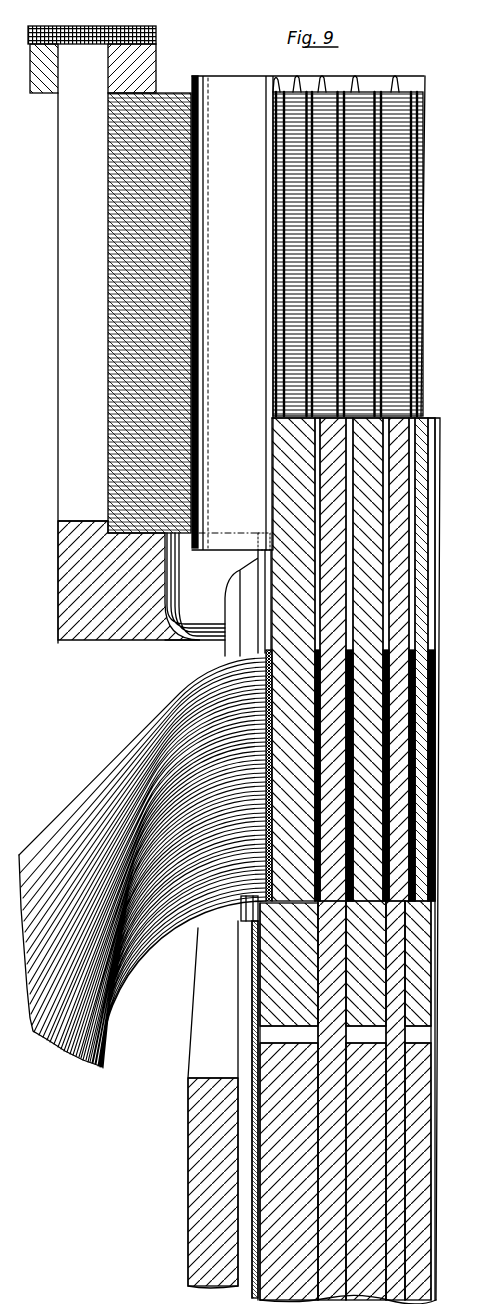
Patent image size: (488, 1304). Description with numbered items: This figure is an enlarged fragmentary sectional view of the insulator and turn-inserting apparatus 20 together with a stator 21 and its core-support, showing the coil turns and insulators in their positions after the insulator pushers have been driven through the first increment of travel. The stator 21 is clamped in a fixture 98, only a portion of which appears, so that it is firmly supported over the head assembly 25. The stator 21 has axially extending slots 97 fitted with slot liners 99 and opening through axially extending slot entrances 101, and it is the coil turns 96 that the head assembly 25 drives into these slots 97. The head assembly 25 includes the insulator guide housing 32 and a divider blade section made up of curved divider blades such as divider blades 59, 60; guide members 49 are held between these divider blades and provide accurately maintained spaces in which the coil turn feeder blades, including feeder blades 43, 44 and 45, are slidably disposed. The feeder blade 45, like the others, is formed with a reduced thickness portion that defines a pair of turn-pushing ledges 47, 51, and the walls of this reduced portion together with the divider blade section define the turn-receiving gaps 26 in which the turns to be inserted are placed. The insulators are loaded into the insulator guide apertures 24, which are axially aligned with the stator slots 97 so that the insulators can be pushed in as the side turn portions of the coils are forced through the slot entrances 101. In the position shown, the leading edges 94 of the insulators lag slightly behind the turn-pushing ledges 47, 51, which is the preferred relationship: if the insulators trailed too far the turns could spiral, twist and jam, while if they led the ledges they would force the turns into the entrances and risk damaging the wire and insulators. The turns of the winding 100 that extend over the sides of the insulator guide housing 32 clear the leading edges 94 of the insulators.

The insulator and turn-inserting apparatus 20 is at (94, 671).
The stator 21 is at (100, 143).
The insulator guide apertures 24 is at (240, 628).
The head assembly 25 is at (164, 1040).
The turn-receiving gaps 26 is at (340, 456).
The insulator guide housing 32 is at (180, 1126).
The coil turn feeder blade 43 is at (414, 515).
The coil turn feeder blade 44 is at (362, 482).
The coil turn feeder blade 45 is at (278, 456).
The turn-pushing ledge 47 is at (262, 898).
The guide member 49 is at (280, 1168).
The turn-pushing ledge 51 is at (310, 898).
The curved divider blade 59 is at (392, 967).
The curved divider blade 60 is at (327, 983).
The leading edges of the insulators 94 is at (237, 892).
The coil turns 96 is at (265, 652).
The slots 97 is at (219, 80).
The fixture 98 is at (50, 612).
The slot liners 99 is at (186, 69).
The winding 100 is at (156, 977).
The slot entrances 101 is at (326, 242).